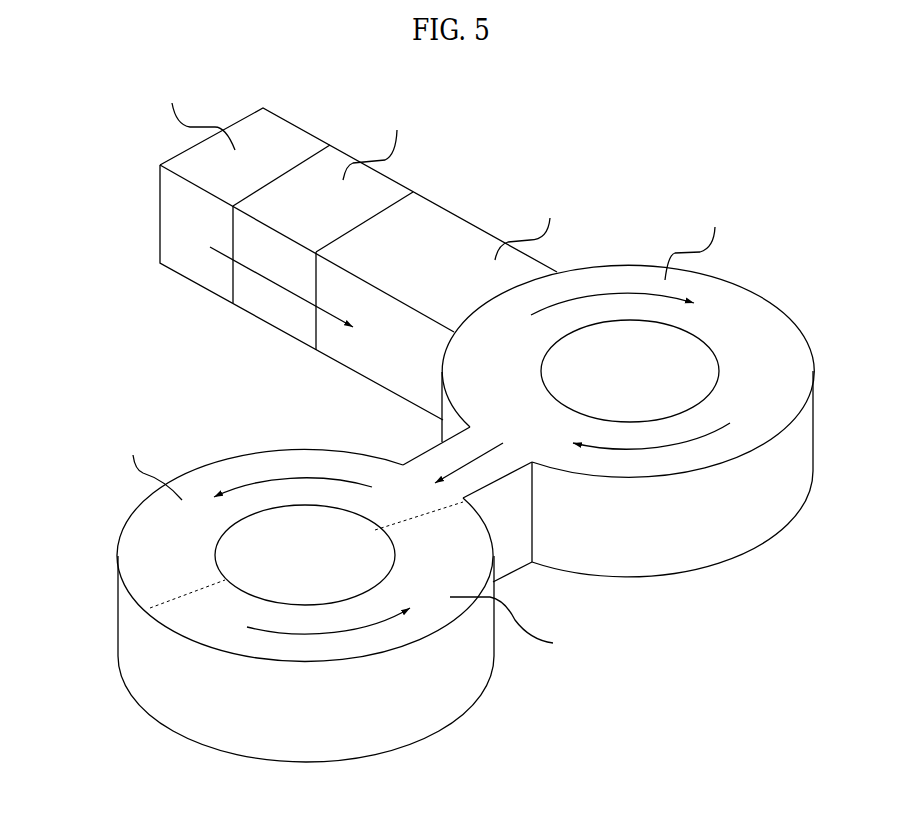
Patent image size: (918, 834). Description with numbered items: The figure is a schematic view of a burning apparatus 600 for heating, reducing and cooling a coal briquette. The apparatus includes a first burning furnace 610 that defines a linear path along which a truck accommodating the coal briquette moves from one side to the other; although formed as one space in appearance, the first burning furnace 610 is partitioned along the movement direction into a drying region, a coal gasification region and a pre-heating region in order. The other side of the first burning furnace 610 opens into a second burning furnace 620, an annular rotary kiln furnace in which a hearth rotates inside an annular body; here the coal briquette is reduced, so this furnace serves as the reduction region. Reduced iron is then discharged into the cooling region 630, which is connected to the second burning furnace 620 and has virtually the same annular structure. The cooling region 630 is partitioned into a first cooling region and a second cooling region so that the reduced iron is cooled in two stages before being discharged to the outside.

The burning apparatus 600 is at (547, 108).
The first burning furnace 610 is at (432, 182).
The second burning furnace 620 is at (760, 278).
The cooling region 630 is at (277, 438).